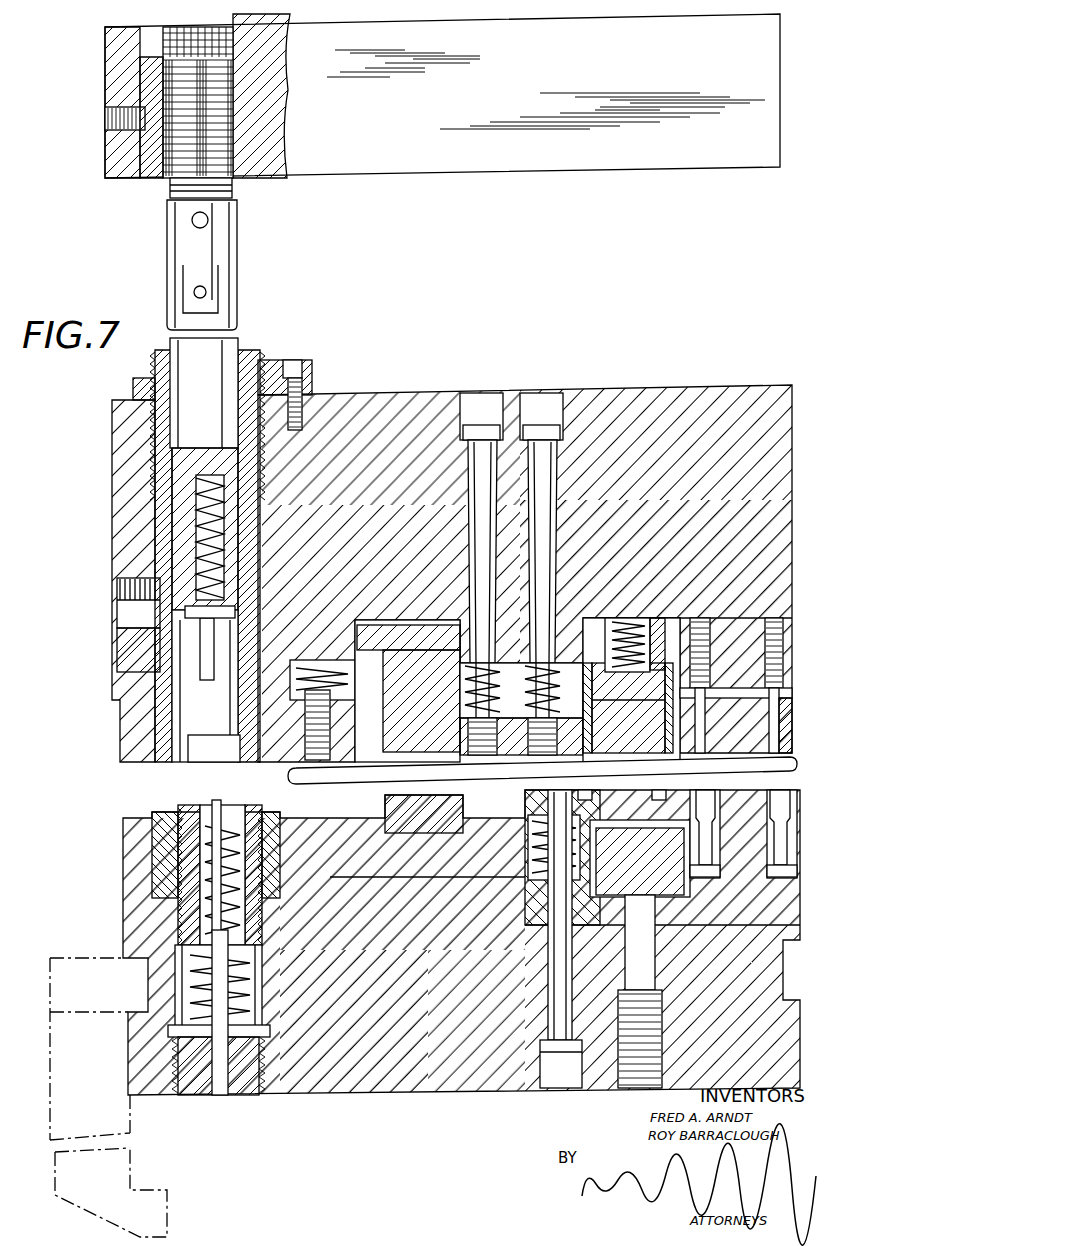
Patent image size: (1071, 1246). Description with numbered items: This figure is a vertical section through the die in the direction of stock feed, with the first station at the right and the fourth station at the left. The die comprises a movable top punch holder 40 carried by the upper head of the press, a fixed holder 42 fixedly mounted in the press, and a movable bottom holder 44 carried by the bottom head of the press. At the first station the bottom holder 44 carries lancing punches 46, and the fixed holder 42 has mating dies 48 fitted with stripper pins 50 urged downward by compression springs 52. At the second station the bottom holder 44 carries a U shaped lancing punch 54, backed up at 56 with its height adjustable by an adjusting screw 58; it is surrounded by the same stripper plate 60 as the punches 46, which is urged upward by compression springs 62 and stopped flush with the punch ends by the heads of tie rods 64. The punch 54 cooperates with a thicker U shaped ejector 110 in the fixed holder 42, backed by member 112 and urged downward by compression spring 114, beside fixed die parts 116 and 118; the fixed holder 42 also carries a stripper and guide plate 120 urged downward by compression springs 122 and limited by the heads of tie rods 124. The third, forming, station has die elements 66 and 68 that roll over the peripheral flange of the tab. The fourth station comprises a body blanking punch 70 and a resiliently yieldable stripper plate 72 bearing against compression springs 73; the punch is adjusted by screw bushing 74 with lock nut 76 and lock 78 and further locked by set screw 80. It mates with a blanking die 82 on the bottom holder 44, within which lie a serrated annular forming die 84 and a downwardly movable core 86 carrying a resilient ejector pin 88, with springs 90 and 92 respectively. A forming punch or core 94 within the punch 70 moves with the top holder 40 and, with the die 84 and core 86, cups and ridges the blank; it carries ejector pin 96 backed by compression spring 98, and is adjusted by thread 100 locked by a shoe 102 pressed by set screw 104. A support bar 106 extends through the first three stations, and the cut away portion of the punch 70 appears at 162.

The movable top punch holder 40 is at (540, 168).
The fixed holder 42 is at (670, 400).
The movable bottom holder 44 is at (392, 1090).
The lancing punches 46 is at (783, 776).
The mating dies 48 is at (712, 740).
The stripper pins 50 is at (712, 715).
The compression springs 52 is at (712, 632).
The U shaped lancing punch 54 is at (659, 792).
The back-up 56 is at (682, 895).
The adjusting screw 58 is at (632, 1088).
The stripper plate 60 is at (772, 792).
The compression springs 62 is at (530, 876).
The tie rods 64 is at (555, 1088).
The forming die element 66 is at (462, 802).
The forming die element 68 is at (384, 716).
The body blanking punch 70 is at (243, 780).
The resiliently yieldable stripper plate 72 is at (118, 730).
The compression springs 73 is at (340, 686).
The screw bushing 74 is at (248, 350).
The lock nut 76 is at (138, 380).
The lock 78 is at (283, 360).
The clamp or set screw 80 is at (118, 607).
The blanking die 82 is at (278, 816).
The serrated annular forming die 84 is at (258, 808).
The downwardly movable core 86 is at (219, 808).
The resilient ejector pin 88 is at (214, 762).
The compression spring 90 is at (258, 1006).
The compression spring 92 is at (245, 977).
The forming punch or core 94 is at (229, 636).
The ejector pin 96 is at (190, 668).
The compression spring 98 is at (224, 562).
The thread 100 is at (163, 34).
The shoe 102 is at (160, 182).
The set screw 104 is at (110, 118).
The support bar 106 is at (340, 785).
The U shaped ejector 110 is at (598, 716).
The backing member 112 is at (660, 618).
The compression spring 114 is at (628, 620).
The fixed die part 116 is at (648, 735).
The fixed die part 118 is at (672, 660).
The stripper and guide plate 120 is at (520, 745).
The compression springs 122 is at (510, 668).
The tie rods 124 is at (546, 432).
The notched or cut away portion 162 is at (222, 735).